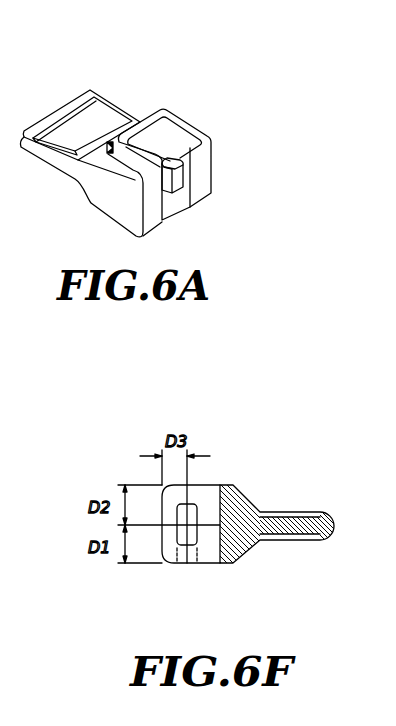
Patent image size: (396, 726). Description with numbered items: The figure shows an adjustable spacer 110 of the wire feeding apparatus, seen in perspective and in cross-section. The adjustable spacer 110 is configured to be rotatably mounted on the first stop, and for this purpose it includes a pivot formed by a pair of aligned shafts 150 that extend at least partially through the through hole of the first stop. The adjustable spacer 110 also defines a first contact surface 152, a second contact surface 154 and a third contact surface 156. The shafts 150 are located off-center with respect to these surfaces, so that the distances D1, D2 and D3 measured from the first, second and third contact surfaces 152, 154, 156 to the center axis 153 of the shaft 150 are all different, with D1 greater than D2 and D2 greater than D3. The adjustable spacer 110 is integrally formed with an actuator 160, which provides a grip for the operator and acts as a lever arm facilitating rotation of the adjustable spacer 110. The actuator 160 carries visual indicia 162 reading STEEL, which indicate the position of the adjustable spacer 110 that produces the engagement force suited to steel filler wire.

In FIG. 6A, the adjustable spacer 110 is at (193, 108).
In FIG. 6F, the adjustable spacer 110 is at (282, 430).
In FIG. 6A, the shafts 150 is at (186, 176).
In FIG. 6F, the shafts 150 is at (196, 504).
In FIG. 6F, the first contact surface 152 is at (183, 568).
In FIG. 6F, the center axis 153 is at (191, 531).
In FIG. 6F, the second contact surface 154 is at (222, 476).
In FIG. 6F, the third contact surface 156 is at (148, 558).
In FIG. 6A, the actuator 160 is at (133, 97).
In FIG. 6A, the visual indicia 162 is at (78, 132).